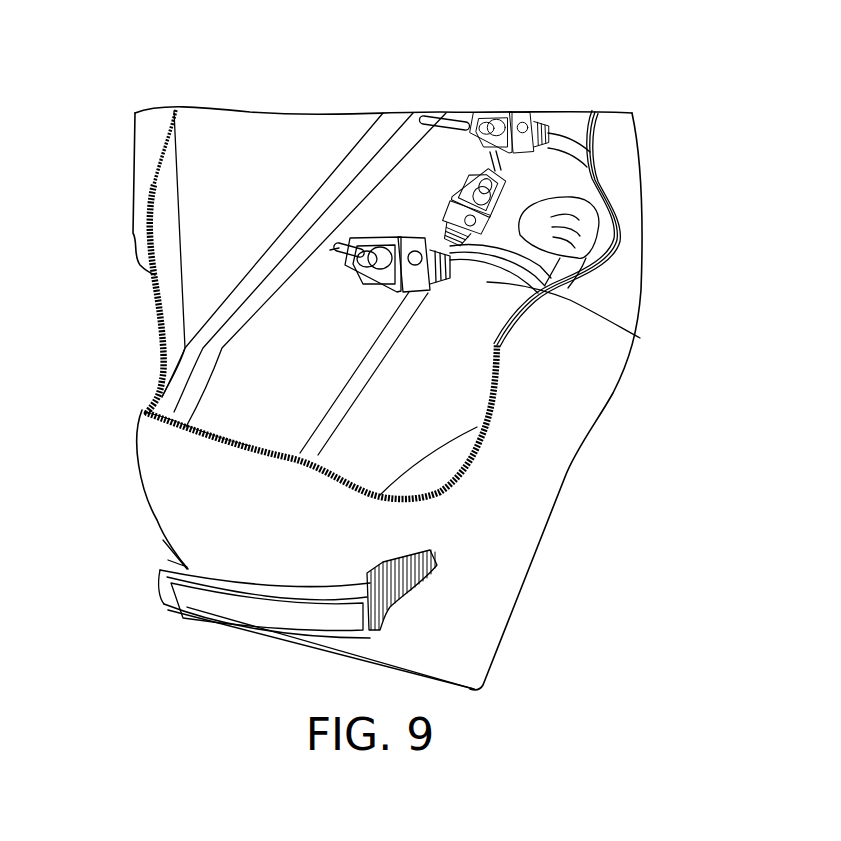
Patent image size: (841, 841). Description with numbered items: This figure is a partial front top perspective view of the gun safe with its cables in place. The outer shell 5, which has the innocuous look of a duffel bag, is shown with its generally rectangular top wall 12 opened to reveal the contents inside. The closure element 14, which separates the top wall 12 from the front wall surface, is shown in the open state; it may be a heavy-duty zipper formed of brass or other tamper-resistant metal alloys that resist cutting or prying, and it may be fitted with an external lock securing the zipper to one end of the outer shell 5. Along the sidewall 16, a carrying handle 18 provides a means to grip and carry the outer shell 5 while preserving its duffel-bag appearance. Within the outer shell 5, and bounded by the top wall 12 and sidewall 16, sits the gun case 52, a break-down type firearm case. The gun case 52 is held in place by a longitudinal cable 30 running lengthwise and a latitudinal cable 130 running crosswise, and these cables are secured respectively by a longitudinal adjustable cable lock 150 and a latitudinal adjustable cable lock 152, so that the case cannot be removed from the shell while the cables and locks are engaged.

The outer shell 5 is at (477, 570).
The top wall 12 is at (135, 152).
The closure element 14 is at (480, 480).
The sidewall 16 is at (223, 490).
The carrying handle 18 is at (212, 608).
The longitudinal cable 30 is at (355, 377).
The gun case 52 is at (415, 377).
The latitudinal cable 130 is at (443, 118).
The longitudinal adjustable cable lock 150 is at (507, 113).
The latitudinal adjustable cable lock 152 is at (503, 192).